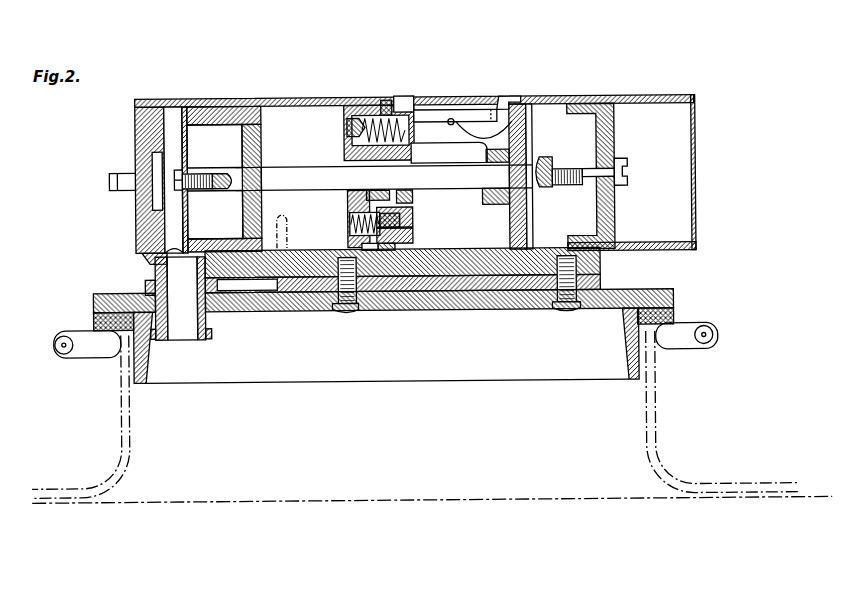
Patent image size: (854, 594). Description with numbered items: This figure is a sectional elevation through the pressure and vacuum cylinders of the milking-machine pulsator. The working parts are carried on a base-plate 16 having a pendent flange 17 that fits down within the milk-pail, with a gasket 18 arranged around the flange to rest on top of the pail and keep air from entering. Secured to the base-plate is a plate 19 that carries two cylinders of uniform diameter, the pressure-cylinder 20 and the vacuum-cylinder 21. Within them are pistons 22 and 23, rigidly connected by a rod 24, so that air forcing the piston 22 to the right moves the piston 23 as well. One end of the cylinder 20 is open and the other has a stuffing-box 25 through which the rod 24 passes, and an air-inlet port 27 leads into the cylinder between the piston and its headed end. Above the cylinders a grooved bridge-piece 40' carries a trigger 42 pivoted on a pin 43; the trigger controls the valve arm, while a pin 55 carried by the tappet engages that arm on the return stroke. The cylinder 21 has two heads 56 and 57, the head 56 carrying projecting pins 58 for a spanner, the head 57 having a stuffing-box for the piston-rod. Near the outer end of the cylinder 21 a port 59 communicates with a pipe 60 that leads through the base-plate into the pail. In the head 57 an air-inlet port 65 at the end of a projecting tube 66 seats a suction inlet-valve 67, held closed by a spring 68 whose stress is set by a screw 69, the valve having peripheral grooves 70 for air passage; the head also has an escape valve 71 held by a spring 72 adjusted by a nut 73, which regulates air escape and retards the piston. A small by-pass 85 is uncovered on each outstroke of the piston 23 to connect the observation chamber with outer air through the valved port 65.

The base-plate 16 is at (685, 277).
The pendent flange 17 is at (607, 367).
The gasket 18 is at (673, 314).
The plate 19 is at (443, 257).
The pressure-cylinder 20 is at (640, 107).
The vacuum-cylinder 21 is at (279, 107).
The piston 22 is at (613, 213).
The piston 23 is at (262, 157).
The rod 24 is at (423, 184).
The stuffing-box 25 is at (495, 197).
The air-inlet port 27 is at (552, 158).
The grooved bridge-piece 40' is at (474, 92).
The trigger 42 is at (499, 101).
The pin 43 is at (450, 126).
The pin 55 is at (435, 117).
The head 56 is at (148, 128).
The head 57 is at (350, 194).
The projecting pins 58 is at (110, 180).
The port 59 is at (145, 258).
The pipe 60 is at (192, 332).
The air-inlet port 65 is at (413, 215).
The projecting tube 66 is at (412, 237).
The suction inlet-valve 67 is at (400, 236).
The spring 68 is at (368, 246).
The screw 69 is at (350, 233).
The grooves 70 is at (352, 127).
The valve 71 is at (369, 105).
The spring 72 is at (390, 101).
The nut 73 is at (410, 107).
The by-pass 85 is at (284, 222).